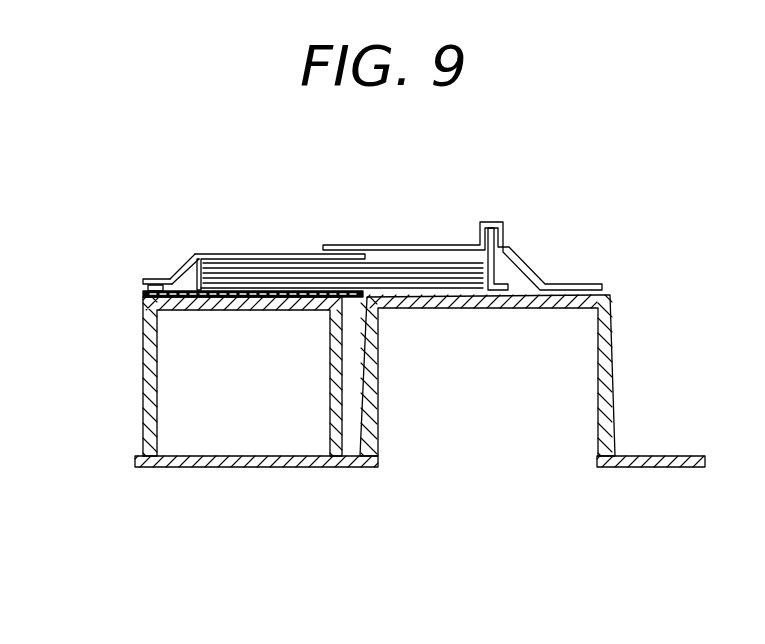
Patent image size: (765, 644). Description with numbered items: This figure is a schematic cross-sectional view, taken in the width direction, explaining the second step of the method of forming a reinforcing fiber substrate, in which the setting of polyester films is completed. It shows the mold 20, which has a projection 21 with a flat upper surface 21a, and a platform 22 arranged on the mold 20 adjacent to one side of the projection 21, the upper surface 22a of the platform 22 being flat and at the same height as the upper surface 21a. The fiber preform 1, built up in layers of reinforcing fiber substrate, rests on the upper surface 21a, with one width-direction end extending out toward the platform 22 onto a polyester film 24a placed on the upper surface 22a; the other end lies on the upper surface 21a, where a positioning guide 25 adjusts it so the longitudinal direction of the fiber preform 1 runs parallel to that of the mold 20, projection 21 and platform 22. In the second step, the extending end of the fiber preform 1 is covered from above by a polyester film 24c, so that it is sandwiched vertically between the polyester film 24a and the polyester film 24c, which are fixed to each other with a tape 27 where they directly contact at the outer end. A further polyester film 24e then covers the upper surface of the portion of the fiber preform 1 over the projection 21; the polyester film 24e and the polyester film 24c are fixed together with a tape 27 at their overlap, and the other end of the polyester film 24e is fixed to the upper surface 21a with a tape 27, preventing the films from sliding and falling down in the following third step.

The fiber preform 1 is at (342, 225).
The mold 20 is at (370, 443).
The projection 21 is at (342, 225).
The upper surface of the projection 21a is at (404, 298).
The platform 22 is at (157, 387).
The upper surface of the platform 22a is at (147, 287).
The polyester film 24a is at (207, 254).
The polyester film 24c is at (267, 229).
The polyester film 24e is at (471, 245).
The positioning guide 25 is at (506, 246).
The tape 27 is at (151, 279).